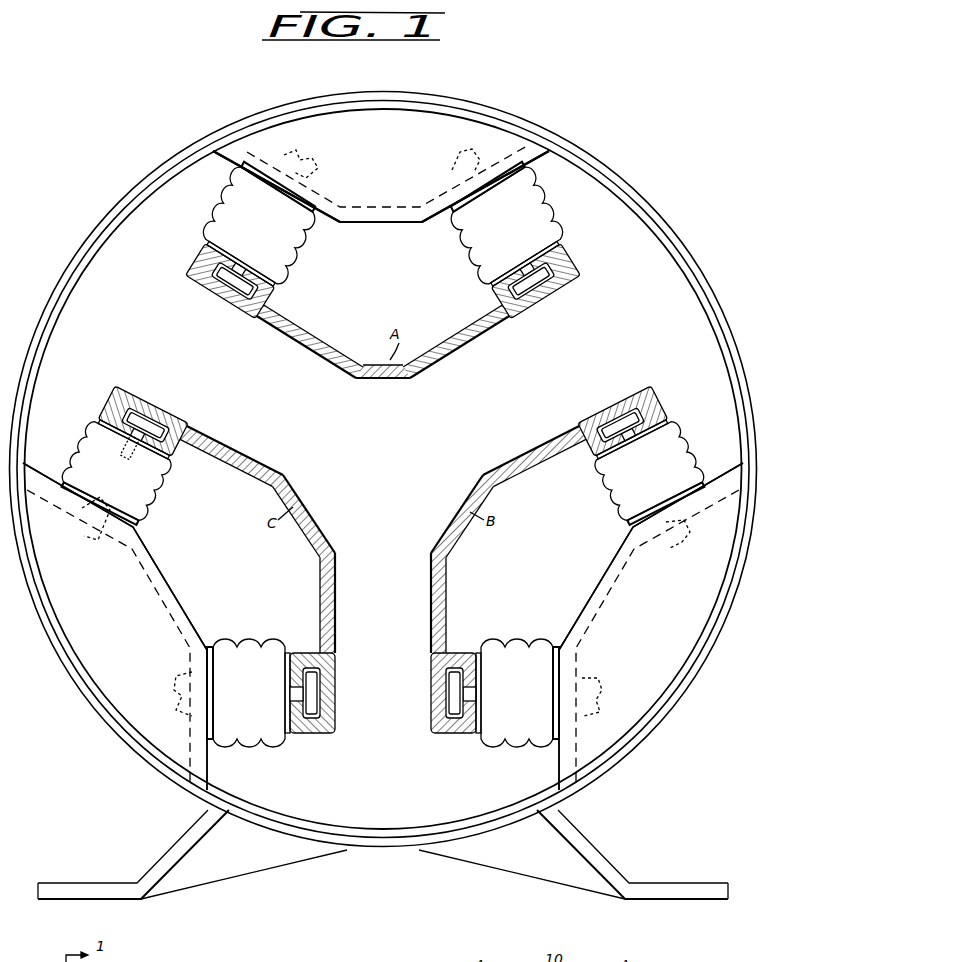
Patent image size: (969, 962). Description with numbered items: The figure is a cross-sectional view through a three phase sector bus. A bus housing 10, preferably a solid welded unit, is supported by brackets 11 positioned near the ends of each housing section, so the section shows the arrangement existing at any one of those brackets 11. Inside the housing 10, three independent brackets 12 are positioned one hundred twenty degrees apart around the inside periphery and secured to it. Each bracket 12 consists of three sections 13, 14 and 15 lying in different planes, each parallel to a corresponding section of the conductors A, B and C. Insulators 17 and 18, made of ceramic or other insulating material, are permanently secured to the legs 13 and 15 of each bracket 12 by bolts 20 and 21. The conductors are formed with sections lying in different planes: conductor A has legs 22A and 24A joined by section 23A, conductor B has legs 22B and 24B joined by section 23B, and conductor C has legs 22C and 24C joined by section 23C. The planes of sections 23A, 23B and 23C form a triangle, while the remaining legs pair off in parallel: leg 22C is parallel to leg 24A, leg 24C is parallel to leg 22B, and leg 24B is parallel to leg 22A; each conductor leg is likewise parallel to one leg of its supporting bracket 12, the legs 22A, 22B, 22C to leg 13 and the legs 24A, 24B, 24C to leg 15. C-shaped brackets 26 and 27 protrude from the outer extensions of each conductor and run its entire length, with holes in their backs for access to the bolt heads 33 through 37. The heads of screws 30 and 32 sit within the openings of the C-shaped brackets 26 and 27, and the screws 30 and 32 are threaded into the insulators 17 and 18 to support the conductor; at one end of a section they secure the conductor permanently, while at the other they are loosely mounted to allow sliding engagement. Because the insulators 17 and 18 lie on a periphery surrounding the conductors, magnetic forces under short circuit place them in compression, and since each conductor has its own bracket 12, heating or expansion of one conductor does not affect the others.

The bus housing 10 is at (660, 225).
The brackets 11 is at (180, 866).
The bracket 12 is at (170, 622).
The section 13 is at (434, 204).
The section 14 is at (378, 207).
The section 15 is at (252, 151).
The insulator 17 is at (298, 258).
The insulator 18 is at (460, 255).
The bolt 20 is at (470, 165).
The bolt 21 is at (306, 166).
The leg of conductor A 22A is at (468, 350).
The section of conductor A 23A is at (384, 380).
The leg of conductor A 24A is at (288, 346).
The leg of conductor B 22B is at (432, 648).
The section of conductor B 23B is at (460, 512).
The leg of conductor B 24B is at (548, 440).
The leg of conductor C 22C is at (246, 446).
The section of conductor C 23C is at (316, 510).
The leg of conductor C 24C is at (337, 628).
The C-shaped bracket 26 is at (566, 266).
The C-shaped bracket 27 is at (200, 263).
The screw 30 is at (146, 420).
The screw 32 is at (292, 694).
The head of screw 33 is at (232, 290).
The bolt 37 is at (548, 296).